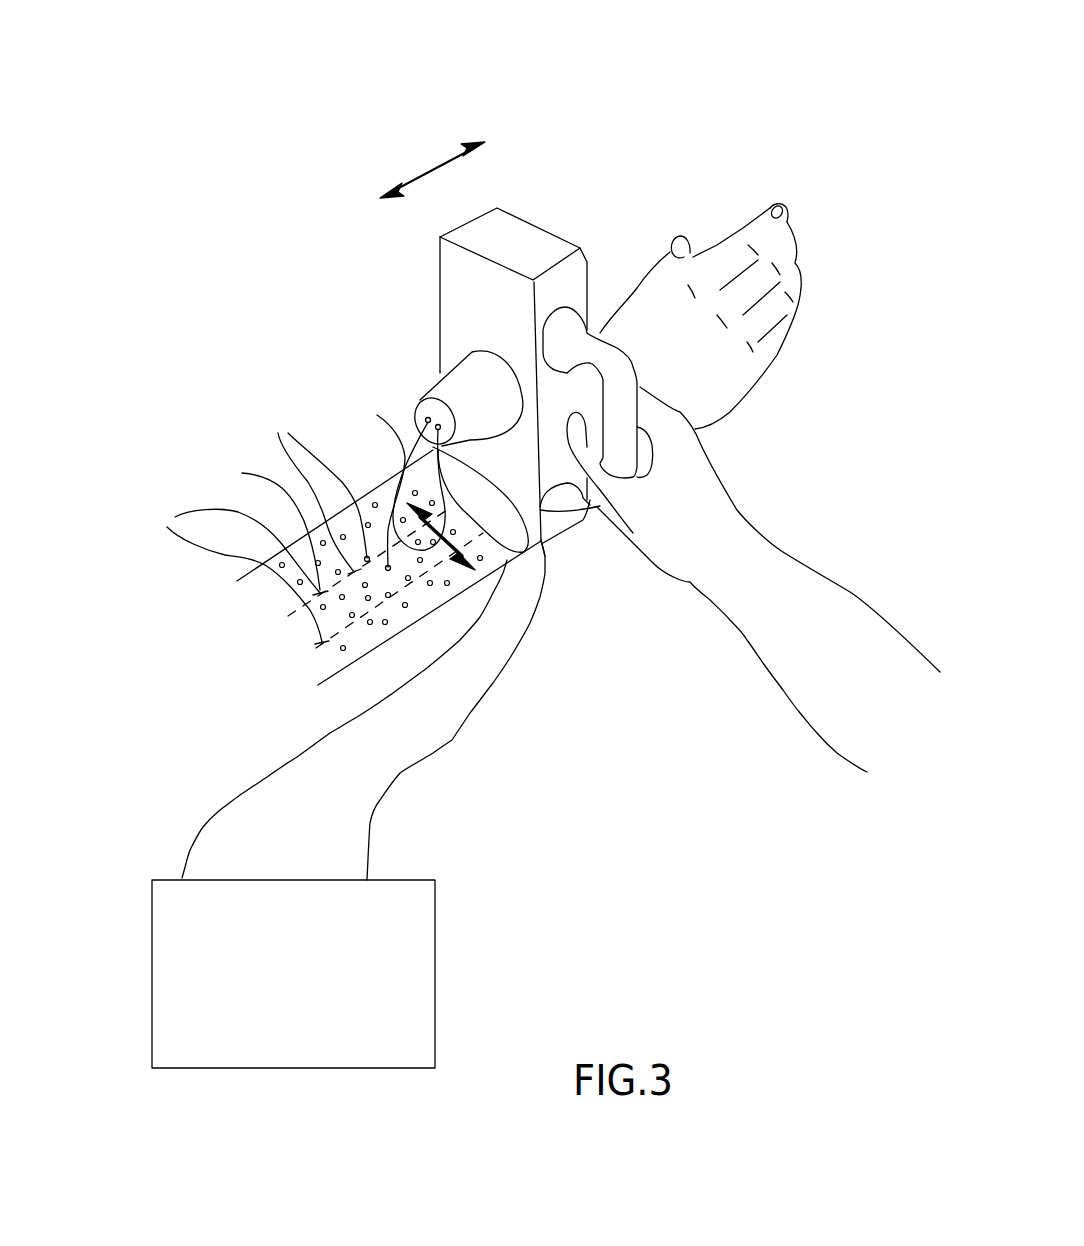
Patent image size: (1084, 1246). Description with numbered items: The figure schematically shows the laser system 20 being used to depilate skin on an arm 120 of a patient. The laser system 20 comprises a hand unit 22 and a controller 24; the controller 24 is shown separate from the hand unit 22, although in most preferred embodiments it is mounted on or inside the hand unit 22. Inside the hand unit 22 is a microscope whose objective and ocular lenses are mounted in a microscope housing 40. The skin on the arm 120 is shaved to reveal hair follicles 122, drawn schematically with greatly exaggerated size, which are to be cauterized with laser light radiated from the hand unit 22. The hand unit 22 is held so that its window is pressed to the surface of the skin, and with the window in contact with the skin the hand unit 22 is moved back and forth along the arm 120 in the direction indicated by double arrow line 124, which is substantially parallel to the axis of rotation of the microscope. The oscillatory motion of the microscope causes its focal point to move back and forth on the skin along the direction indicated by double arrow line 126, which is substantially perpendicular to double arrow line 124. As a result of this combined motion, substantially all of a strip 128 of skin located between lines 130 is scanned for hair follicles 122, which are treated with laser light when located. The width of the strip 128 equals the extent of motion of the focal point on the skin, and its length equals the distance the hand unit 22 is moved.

The laser system 20 is at (610, 713).
The hand unit 22 is at (560, 186).
The controller 24 is at (162, 853).
The microscope housing 40 is at (370, 837).
The arm 120 is at (313, 358).
The hair follicles 122 is at (363, 529).
The double arrow line 124 is at (440, 163).
The double arrow line 126 is at (365, 484).
The strip of skin 128 is at (337, 549).
The lines 130 is at (329, 567).